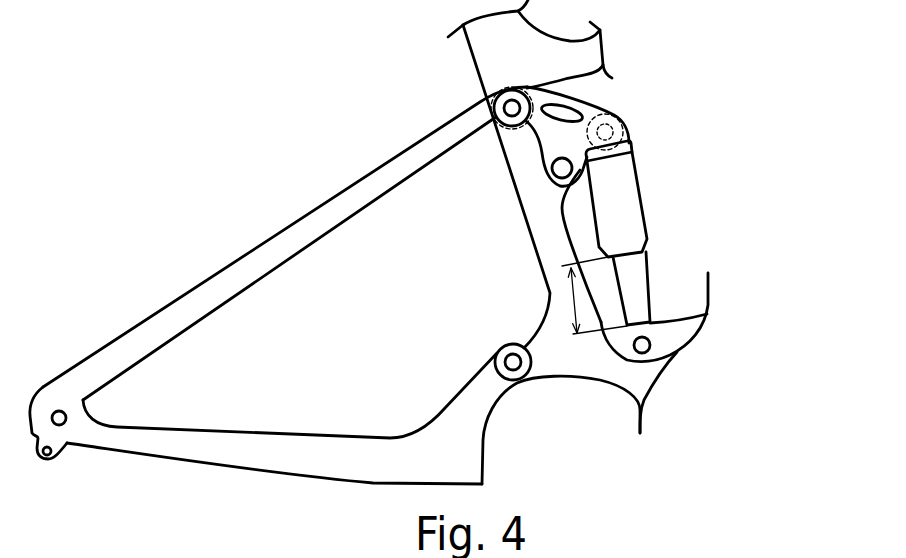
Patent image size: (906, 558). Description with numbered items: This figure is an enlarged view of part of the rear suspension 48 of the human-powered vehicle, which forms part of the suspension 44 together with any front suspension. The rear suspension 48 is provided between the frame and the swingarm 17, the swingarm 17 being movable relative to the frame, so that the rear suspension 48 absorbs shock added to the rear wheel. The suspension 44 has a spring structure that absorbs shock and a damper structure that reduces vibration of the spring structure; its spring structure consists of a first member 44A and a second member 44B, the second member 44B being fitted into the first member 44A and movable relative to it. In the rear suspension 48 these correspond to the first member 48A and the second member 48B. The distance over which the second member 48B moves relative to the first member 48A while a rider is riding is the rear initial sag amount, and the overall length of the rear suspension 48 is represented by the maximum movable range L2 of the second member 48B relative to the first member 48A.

The swingarm 17 is at (340, 193).
The rear suspension 48 is at (691, 179).
The suspension 44 is at (703, 95).
The first member of the rear suspension 48A is at (691, 199).
The first member 44A is at (641, 178).
The second member of the rear suspension 48B is at (705, 278).
The second member 44B is at (650, 265).
The maximum movable range L2 is at (573, 303).